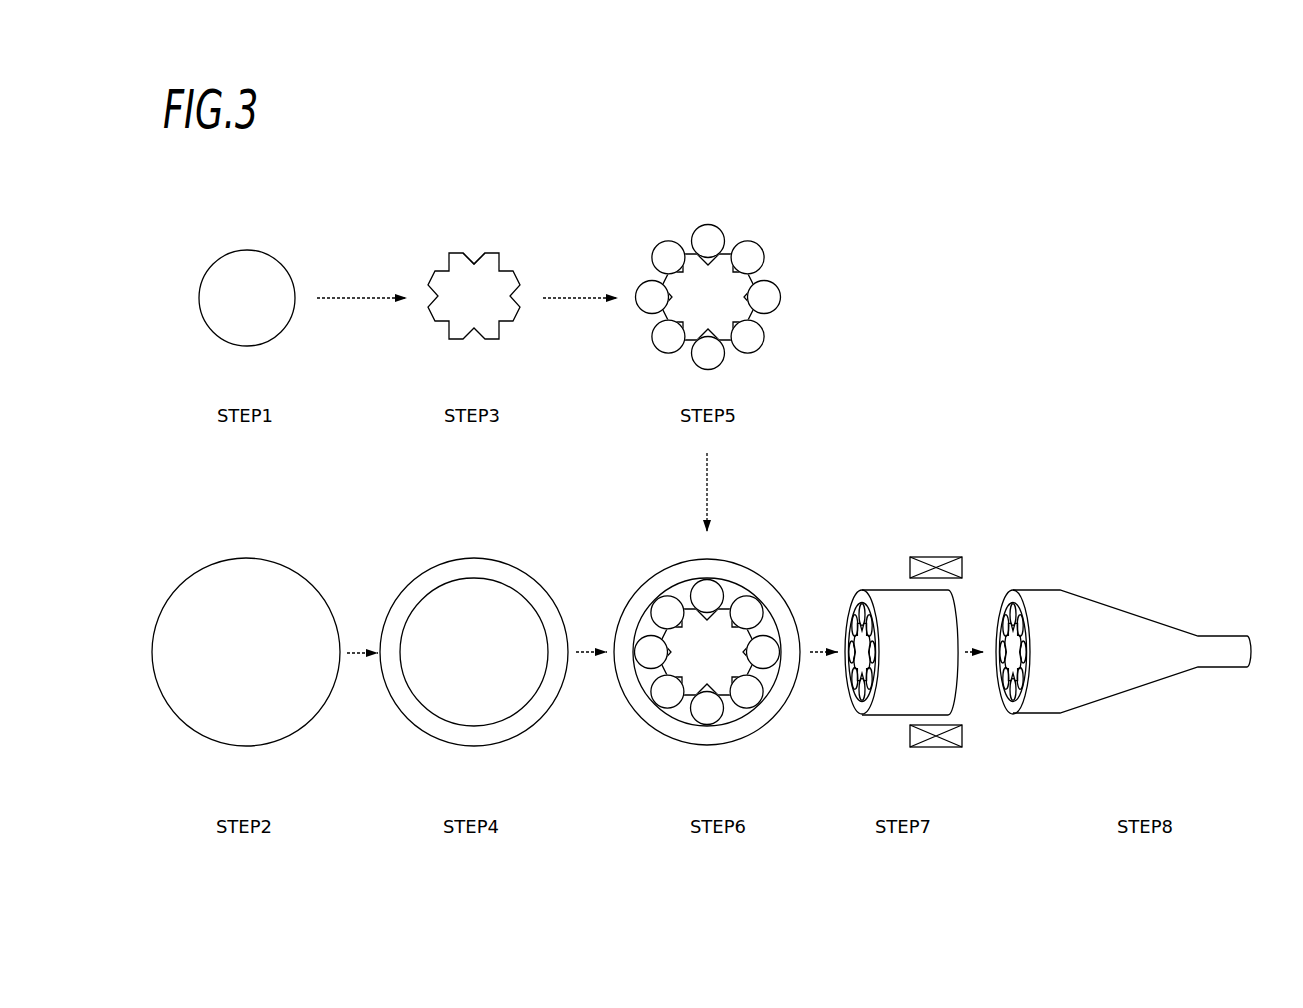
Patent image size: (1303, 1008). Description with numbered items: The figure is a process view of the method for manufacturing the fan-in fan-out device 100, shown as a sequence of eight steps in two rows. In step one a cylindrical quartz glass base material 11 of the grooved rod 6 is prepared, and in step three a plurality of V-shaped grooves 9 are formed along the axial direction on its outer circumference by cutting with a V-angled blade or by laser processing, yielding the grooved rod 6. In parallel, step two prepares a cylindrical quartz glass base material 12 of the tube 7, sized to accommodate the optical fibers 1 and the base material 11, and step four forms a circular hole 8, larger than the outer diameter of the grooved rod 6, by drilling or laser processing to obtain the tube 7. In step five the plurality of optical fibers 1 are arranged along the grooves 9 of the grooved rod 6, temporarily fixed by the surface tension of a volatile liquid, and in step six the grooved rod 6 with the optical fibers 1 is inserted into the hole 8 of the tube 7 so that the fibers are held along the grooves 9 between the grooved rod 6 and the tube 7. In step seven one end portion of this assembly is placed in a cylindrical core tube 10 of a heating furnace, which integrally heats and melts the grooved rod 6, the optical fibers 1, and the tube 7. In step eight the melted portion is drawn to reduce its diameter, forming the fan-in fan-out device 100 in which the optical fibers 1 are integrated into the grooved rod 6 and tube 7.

The optical fibers 1 is at (766, 236).
The grooved rod 6 is at (513, 242).
The tube 7 is at (535, 567).
The hole 8 is at (513, 693).
The V-shaped grooves 9 is at (474, 254).
The cylindrical core tube 10 is at (948, 553).
The base material of the grooved rod 11 is at (247, 250).
The base material of the tube 12 is at (217, 562).
The fan-in fan-out device 100 is at (1119, 603).